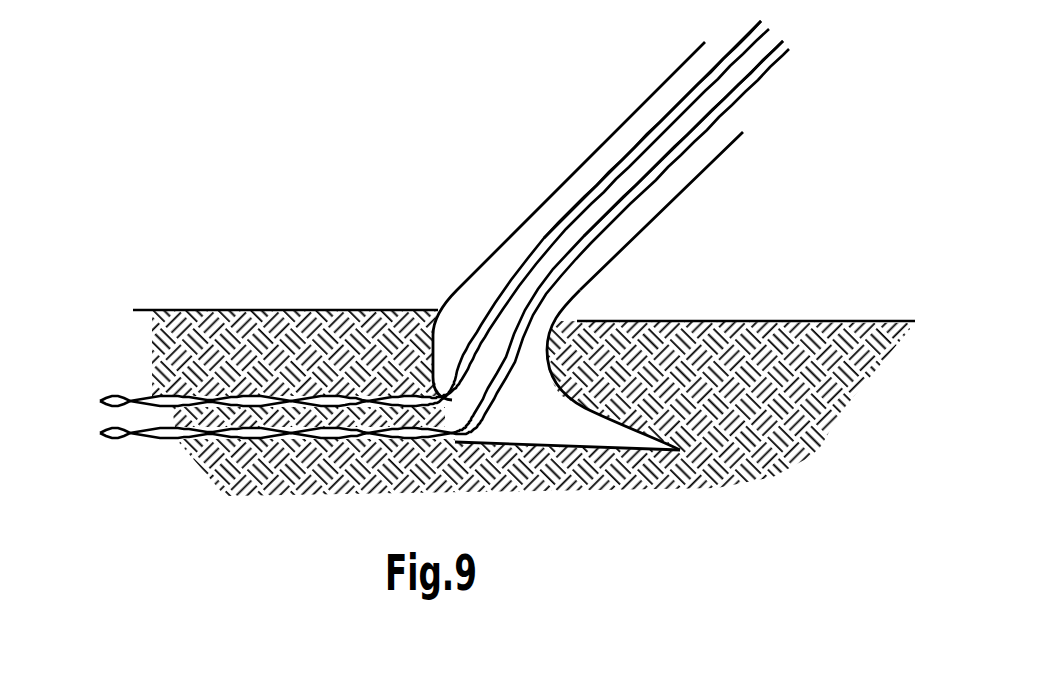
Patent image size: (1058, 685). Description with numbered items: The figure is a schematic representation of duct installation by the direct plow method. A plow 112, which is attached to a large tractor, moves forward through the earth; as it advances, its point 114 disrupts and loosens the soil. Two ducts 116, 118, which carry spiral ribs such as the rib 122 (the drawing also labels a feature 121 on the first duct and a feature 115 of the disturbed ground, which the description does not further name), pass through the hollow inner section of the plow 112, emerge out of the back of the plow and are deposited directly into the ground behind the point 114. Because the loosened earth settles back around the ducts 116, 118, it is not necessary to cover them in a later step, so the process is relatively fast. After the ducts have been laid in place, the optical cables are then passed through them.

The plow 112 is at (633, 246).
The point 114 is at (680, 450).
The curved side wall of trench cavity 115 is at (595, 317).
The duct 116 is at (753, 27).
The duct 118 is at (770, 62).
The sheath of first cable 121 is at (607, 175).
The spiral rib 122 is at (653, 173).